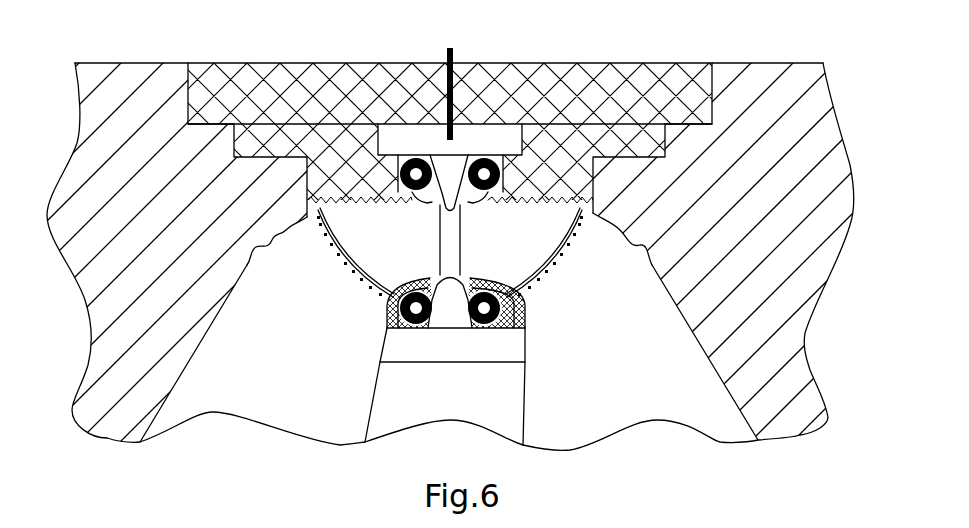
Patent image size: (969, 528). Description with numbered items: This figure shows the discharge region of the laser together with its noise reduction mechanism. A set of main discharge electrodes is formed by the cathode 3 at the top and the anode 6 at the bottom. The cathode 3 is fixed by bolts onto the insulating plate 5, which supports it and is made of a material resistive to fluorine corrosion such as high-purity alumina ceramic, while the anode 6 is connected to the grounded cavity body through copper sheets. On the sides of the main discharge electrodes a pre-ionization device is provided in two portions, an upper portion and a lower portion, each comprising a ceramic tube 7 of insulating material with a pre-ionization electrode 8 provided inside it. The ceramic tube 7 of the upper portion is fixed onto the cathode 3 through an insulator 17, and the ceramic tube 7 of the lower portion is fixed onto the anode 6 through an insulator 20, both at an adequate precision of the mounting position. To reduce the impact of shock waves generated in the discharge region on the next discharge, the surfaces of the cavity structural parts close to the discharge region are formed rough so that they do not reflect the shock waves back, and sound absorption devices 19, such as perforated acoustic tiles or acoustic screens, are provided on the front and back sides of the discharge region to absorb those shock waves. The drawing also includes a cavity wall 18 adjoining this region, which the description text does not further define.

The cathode 3 is at (433, 145).
The insulating plate 5 is at (568, 82).
The anode 6 is at (473, 343).
The ceramic tube 7 is at (507, 283).
The pre-ionization electrode 8 is at (525, 350).
The insulator 17 is at (647, 160).
The cavity wall 18 is at (286, 229).
The sound absorption device 19 is at (347, 272).
The insulator 20 is at (524, 310).